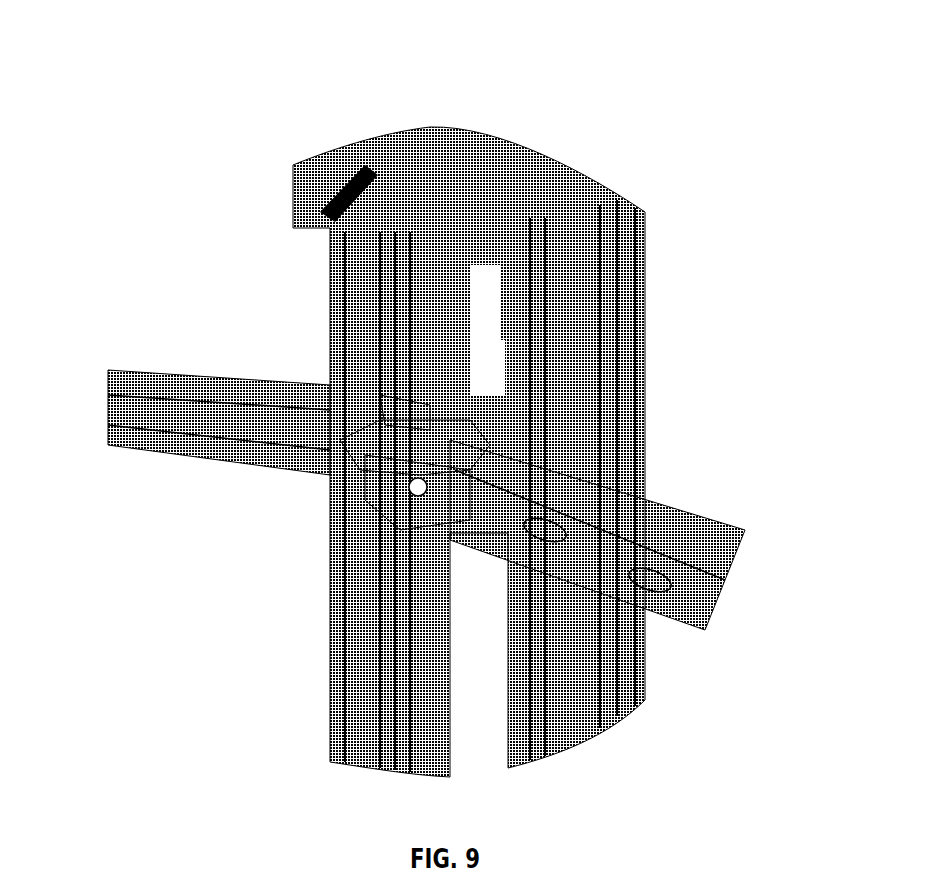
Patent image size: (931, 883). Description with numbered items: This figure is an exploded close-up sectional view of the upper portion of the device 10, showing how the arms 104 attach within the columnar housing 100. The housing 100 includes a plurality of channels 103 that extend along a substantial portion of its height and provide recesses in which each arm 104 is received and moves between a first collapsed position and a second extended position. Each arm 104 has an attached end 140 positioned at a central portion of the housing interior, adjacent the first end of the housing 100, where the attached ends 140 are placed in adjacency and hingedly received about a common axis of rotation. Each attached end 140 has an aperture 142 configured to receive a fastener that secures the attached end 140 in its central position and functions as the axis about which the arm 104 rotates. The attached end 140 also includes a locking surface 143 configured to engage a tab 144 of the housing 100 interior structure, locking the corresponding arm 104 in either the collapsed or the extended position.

The device 10 is at (437, 400).
The columnar housing 100 is at (625, 233).
The channels 103 is at (608, 318).
The arm 104 is at (190, 442).
The attached end 140 is at (340, 456).
The aperture 142 is at (406, 492).
The locking surface 143 is at (372, 470).
The tab 144 is at (410, 425).